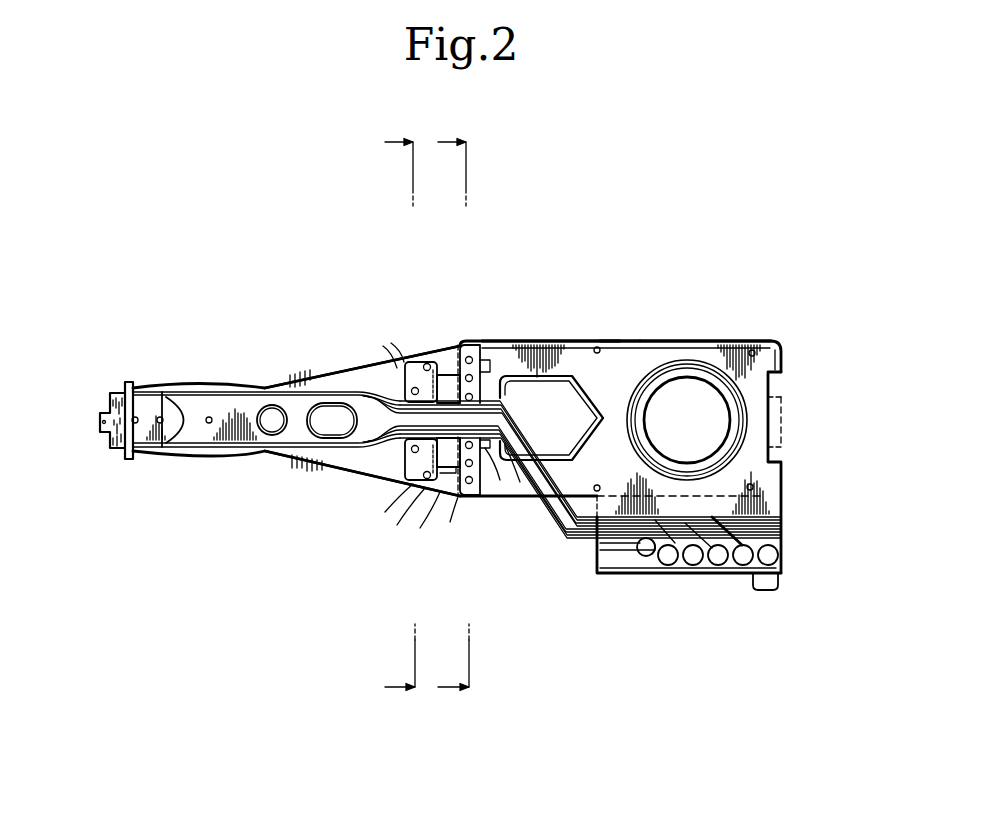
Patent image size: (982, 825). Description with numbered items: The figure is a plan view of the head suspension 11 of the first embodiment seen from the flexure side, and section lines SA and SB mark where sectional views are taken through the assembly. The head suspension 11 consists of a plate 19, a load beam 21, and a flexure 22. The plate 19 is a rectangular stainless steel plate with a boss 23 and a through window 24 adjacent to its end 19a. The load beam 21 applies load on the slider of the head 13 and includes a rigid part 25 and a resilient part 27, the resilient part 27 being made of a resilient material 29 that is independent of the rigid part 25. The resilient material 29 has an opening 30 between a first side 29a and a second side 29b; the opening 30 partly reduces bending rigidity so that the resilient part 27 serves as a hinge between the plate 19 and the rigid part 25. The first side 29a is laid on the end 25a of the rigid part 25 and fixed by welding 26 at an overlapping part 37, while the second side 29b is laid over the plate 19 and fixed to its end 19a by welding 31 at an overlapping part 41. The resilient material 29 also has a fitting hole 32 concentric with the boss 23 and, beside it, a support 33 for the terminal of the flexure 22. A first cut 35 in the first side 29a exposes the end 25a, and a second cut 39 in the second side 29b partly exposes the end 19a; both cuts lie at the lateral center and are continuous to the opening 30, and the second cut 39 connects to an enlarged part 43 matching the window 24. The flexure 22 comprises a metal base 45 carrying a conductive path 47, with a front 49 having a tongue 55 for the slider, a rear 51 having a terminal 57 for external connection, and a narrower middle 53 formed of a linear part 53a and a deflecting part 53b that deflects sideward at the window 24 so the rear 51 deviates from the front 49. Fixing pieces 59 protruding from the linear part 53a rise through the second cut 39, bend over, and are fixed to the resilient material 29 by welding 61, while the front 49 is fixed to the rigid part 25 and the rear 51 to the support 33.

The head suspension 11 is at (668, 228).
The head 13 is at (127, 381).
The plate 19 is at (753, 340).
The end of the plate 19a is at (520, 406).
The load beam 21 is at (304, 378).
The flexure 22 is at (220, 452).
The boss 23 is at (713, 341).
The through window 24 is at (522, 372).
The rigid part 25 is at (353, 368).
The end of the rigid part 25a is at (440, 497).
The welding 26 is at (408, 360).
The resilient part 27 is at (444, 374).
The resilient material 29 is at (613, 362).
The first side of the resilient material 29a is at (414, 470).
The second side of the resilient material 29b is at (562, 347).
The opening 30 is at (457, 476).
The welding 31 is at (467, 352).
The fitting hole 32 is at (662, 388).
The support 33 is at (648, 575).
The first cut 35 is at (405, 365).
The overlapping part 37 is at (414, 480).
The second cut 39 is at (481, 366).
The overlapping part 41 is at (462, 497).
The enlarged part 43 is at (556, 375).
The metal base 45 is at (235, 384).
The conductive path 47 is at (285, 452).
The front of the metal base 49 is at (205, 386).
The rear of the metal base 51 is at (765, 533).
The middle of the metal base 53 is at (546, 507).
The linear part 53a is at (287, 451).
The deflecting part 53b is at (565, 543).
The tongue 55 is at (150, 430).
The terminal 57 is at (730, 572).
The fixing piece 59 is at (483, 470).
The welding 61 is at (470, 494).
The section line SA— SA is at (394, 417).
The section line SB— SB is at (457, 417).